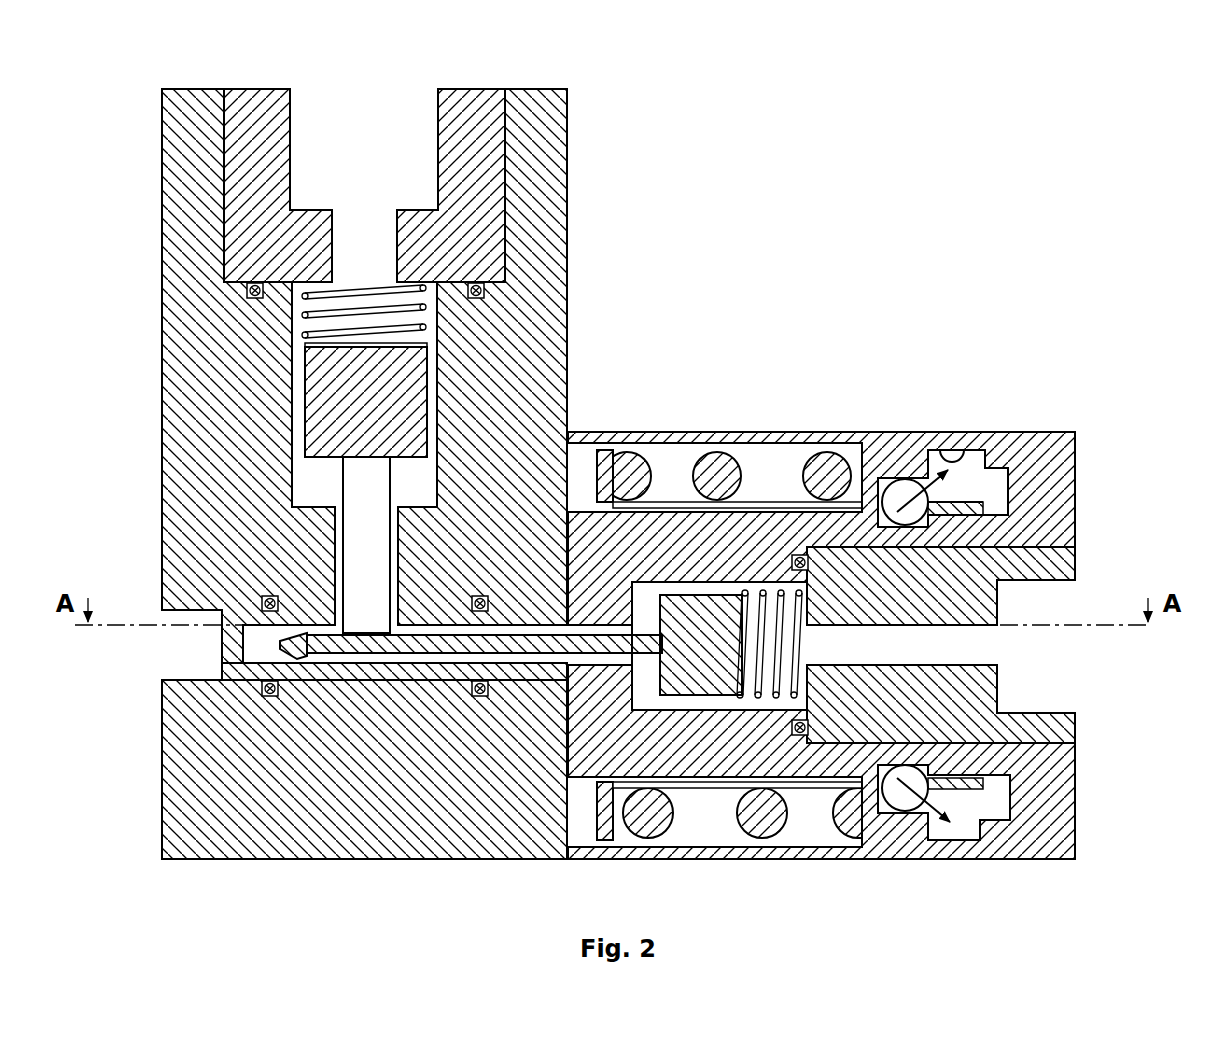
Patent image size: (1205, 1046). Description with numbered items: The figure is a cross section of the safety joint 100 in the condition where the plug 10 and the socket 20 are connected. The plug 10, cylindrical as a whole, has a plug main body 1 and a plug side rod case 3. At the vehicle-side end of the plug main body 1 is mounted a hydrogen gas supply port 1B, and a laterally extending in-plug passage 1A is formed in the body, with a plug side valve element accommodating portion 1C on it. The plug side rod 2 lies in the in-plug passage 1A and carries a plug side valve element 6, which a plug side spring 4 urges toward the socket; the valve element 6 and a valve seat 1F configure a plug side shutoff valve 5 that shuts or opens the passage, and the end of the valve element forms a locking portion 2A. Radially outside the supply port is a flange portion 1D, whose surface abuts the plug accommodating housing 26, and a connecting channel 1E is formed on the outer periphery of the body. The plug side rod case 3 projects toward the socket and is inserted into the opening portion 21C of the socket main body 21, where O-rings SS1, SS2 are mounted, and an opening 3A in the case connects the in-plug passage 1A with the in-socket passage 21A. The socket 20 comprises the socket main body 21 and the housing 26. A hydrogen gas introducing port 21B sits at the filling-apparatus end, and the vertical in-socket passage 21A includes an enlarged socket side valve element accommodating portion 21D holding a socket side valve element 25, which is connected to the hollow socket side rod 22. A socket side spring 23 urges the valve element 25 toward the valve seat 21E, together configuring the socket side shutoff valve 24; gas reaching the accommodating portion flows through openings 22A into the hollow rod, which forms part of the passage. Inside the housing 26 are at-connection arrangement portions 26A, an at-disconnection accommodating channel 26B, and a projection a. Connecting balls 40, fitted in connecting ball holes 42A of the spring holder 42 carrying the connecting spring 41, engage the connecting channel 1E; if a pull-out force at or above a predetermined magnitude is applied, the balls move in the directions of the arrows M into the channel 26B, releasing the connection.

The safety joint 100 is at (915, 228).
The plug 10 is at (1108, 562).
The plug main body 1 is at (568, 750).
The in-plug passage 1A is at (650, 596).
The hydrogen gas supply port 1B is at (1060, 690).
The plug side valve element accommodating portion 1C is at (738, 584).
The flange portion 1D is at (1075, 441).
The connecting channel 1E is at (915, 530).
The valve seat 1F is at (633, 690).
The plug side rod 2 is at (525, 655).
The locking portion 2A is at (298, 662).
The plug side rod case 3 is at (390, 674).
The opening 3A is at (383, 612).
The plug side spring 4 is at (765, 695).
The plug side shutoff valve 5 is at (645, 618).
The plug side valve element 6 is at (678, 695).
The socket 20 is at (140, 311).
The socket main body 21 is at (162, 510).
The in-socket passage 21A is at (428, 478).
The hydrogen gas introducing port 21B is at (298, 107).
The opening portion 21C is at (190, 672).
The socket side valve element accommodating portion 21D is at (437, 380).
The valve seat 21E is at (305, 500).
The socket side rod 22 is at (340, 560).
The openings 22A is at (395, 497).
The socket side spring 23 is at (300, 311).
The socket side shutoff valve 24 is at (313, 488).
The socket side valve element 25 is at (305, 395).
The plug accommodating housing 26 is at (652, 435).
The at-connection arrangement portions 26A is at (952, 452).
The at-disconnection accommodating channel 26B is at (968, 452).
The connecting balls 40 is at (903, 478).
The connecting spring 41 is at (720, 458).
The spring holder 42 is at (958, 508).
The connecting ball holes 42A is at (958, 500).
The projection a is at (880, 480).
The arrows M is at (940, 468).
The O-ring SS1 is at (478, 698).
The O-ring SS2 is at (268, 698).